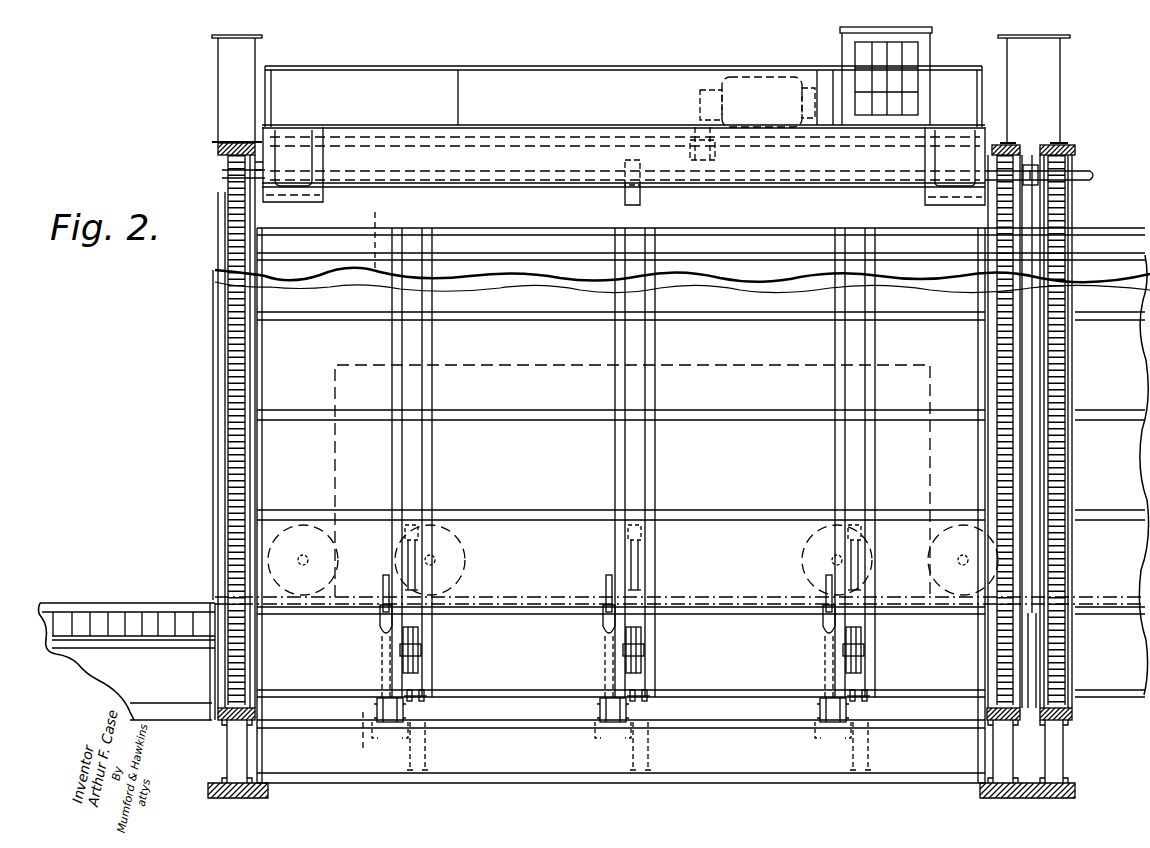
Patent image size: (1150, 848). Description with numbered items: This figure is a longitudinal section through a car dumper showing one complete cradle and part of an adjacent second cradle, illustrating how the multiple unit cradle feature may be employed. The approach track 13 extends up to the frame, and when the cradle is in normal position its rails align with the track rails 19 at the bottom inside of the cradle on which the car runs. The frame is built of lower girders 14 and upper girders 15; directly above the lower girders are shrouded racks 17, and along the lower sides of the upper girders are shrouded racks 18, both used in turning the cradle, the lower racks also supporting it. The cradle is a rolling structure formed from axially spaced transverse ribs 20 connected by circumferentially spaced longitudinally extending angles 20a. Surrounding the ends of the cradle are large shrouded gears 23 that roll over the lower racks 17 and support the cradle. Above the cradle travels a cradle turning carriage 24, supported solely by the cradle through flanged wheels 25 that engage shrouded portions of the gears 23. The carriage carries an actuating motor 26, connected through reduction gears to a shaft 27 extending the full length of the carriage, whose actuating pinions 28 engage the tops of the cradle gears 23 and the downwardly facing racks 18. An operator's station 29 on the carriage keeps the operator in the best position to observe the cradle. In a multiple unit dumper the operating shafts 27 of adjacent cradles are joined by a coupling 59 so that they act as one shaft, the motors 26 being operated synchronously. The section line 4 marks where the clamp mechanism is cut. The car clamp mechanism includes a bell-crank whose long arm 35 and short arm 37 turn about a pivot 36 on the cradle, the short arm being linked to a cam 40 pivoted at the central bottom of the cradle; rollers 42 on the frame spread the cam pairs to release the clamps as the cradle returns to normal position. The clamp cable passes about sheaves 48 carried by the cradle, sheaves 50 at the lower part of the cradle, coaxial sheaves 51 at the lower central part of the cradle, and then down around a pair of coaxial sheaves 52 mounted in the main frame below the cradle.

The section line 4 is at (366, 483).
The approach track 13 is at (135, 602).
The lower girders 14 is at (227, 750).
The upper girders 15 is at (218, 104).
The lower racks 17 is at (256, 715).
The upper racks 18 is at (218, 152).
The track rails 19 is at (512, 597).
The transverse ribs 20 is at (412, 465).
The longitudinally extending angles 20a is at (752, 503).
The shrouded gears 23 is at (225, 440).
The cradle turning carriage 24 is at (514, 126).
The flanged wheels 25 is at (985, 205).
The actuating motor 26 is at (762, 77).
The shaft 27 is at (1096, 184).
The actuating pinions 28 is at (228, 176).
The operator's station 29 is at (842, 50).
The long arm of bell-crank 35 is at (430, 556).
The bell-crank pivot 36 is at (385, 576).
The short arm of bell-crank 37 is at (380, 589).
The cam 40 is at (382, 688).
The roller 42 is at (377, 704).
The sheaves 48 is at (416, 530).
The sheaves 50 is at (420, 655).
The sheaves 51 is at (426, 697).
The coaxial sheaves 52 is at (430, 752).
The coupling 59 is at (1030, 163).